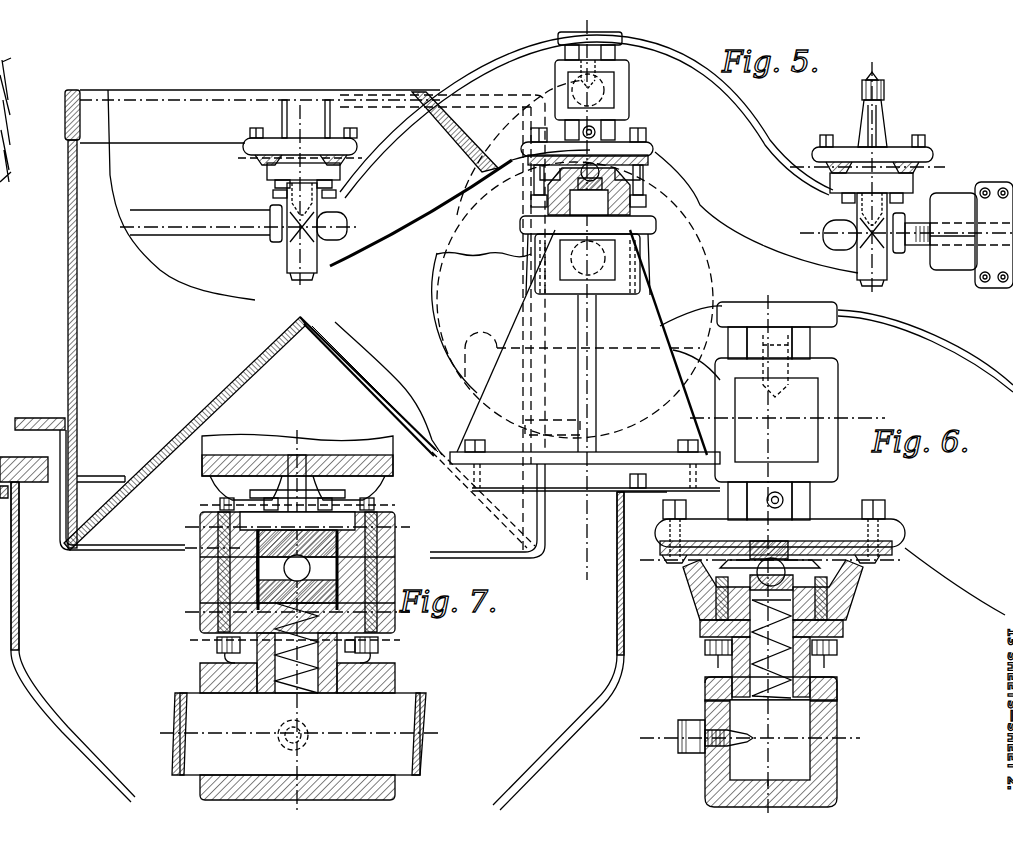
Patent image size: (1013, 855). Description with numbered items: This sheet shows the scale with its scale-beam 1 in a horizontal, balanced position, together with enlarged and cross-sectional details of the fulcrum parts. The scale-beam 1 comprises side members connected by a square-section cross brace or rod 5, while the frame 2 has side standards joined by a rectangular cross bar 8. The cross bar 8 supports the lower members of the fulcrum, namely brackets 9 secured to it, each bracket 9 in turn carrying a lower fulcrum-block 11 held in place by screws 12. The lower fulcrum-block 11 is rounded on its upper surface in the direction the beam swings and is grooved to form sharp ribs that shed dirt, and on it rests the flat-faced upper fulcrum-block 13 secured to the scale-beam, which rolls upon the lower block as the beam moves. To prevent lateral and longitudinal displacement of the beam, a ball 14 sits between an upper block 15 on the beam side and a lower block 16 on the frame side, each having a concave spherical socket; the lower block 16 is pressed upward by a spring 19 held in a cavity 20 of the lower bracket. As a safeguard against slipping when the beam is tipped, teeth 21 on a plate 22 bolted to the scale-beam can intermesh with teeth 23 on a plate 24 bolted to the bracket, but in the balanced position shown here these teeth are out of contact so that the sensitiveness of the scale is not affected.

In FIG. 5, the scale-beam 1 is at (640, 120).
In FIG. 6, the scale-beam 1 is at (836, 460).
In FIG. 5, the frame 2 is at (576, 300).
In FIG. 5, the cross brace or rod 5 is at (612, 76).
In FIG. 6, the cross brace or rod 5 is at (805, 412).
In FIG. 5, the cross brace or bar 8 is at (610, 262).
In FIG. 6, the cross brace or bar 8 is at (750, 742).
In FIG. 7, the cross brace or bar 8 is at (300, 746).
In FIG. 5, the bracket 9 is at (635, 230).
In FIG. 7, the lower fulcrum-block 11 is at (200, 578).
In FIG. 7, the screw 12 is at (395, 645).
In FIG. 7, the upper fulcrum-block 13 is at (215, 538).
In FIG. 5, the ball 14 is at (610, 155).
In FIG. 6, the ball 14 is at (840, 600).
In FIG. 7, the ball 14 is at (230, 585).
In FIG. 5, the upper block 15 is at (600, 150).
In FIG. 7, the upper block 15 is at (370, 518).
In FIG. 7, the lower block 16 is at (215, 640).
In FIG. 6, the spring 19 is at (815, 672).
In FIG. 7, the spring 19 is at (380, 660).
In FIG. 6, the cavity 20 is at (830, 690).
In FIG. 7, the cavity 20 is at (392, 682).
In FIG. 6, the teeth 21 is at (700, 560).
In FIG. 5, the plate 22 is at (548, 168).
In FIG. 6, the plate 22 is at (860, 555).
In FIG. 5, the teeth 23 is at (625, 172).
In FIG. 6, the teeth 23 is at (720, 566).
In FIG. 5, the plate 24 is at (555, 185).
In FIG. 6, the plate 24 is at (706, 605).